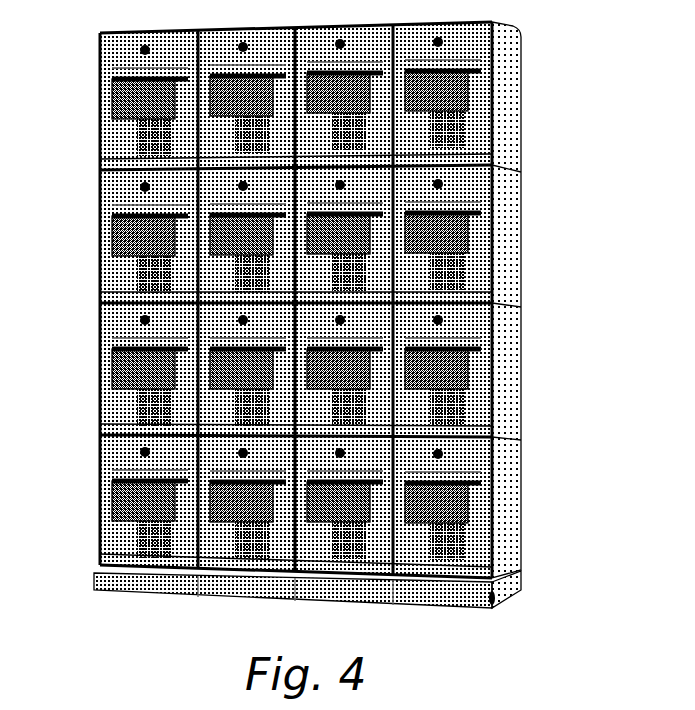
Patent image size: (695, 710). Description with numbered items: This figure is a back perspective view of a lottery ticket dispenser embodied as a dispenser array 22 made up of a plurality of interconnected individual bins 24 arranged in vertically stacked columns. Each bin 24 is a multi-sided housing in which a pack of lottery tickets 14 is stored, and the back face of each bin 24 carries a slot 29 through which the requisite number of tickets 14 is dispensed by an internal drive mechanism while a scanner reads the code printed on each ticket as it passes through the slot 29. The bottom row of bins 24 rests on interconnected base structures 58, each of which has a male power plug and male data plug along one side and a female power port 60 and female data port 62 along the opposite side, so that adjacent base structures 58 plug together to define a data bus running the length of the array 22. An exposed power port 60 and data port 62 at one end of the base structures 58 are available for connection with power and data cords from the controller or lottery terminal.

The lottery tickets 14 is at (118, 100).
The dispenser array 22 is at (612, 128).
The bins 24 is at (520, 74).
The slot 29 is at (110, 353).
The base structures 58 is at (128, 585).
The female power port 60 is at (509, 593).
The female data port 62 is at (491, 604).